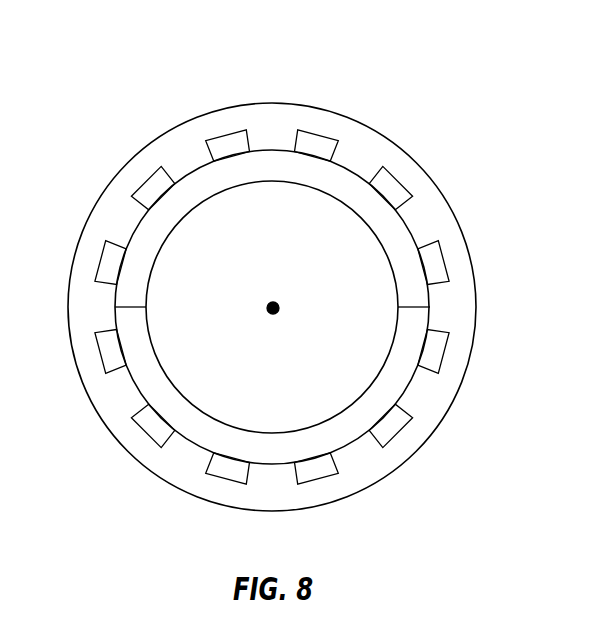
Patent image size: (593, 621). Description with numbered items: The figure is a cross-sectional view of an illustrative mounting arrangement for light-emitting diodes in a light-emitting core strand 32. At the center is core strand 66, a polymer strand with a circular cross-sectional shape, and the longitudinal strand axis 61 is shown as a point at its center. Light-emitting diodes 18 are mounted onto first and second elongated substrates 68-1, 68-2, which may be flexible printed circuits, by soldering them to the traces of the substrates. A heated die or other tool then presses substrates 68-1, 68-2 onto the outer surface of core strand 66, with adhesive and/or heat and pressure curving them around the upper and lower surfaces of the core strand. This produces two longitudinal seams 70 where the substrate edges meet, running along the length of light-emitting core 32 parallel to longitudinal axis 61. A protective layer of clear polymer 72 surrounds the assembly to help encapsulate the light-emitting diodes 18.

The light-emitting core strand 32 is at (437, 68).
The clear polymer 72 is at (468, 298).
The first elongated substrate 68-1 is at (272, 157).
The second elongated substrate 68-2 is at (268, 455).
The core strand 66 is at (205, 398).
The longitudinal seam 70 is at (128, 307).
The longitudinal strand axis 61 is at (266, 308).
The light-emitting diodes 18 is at (413, 195).